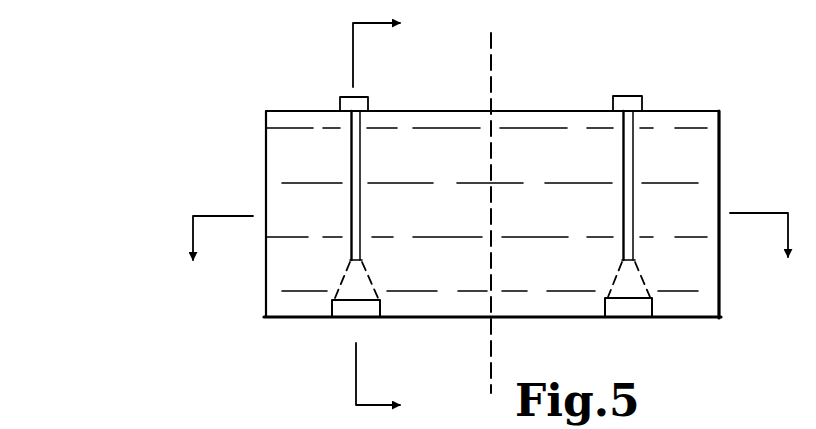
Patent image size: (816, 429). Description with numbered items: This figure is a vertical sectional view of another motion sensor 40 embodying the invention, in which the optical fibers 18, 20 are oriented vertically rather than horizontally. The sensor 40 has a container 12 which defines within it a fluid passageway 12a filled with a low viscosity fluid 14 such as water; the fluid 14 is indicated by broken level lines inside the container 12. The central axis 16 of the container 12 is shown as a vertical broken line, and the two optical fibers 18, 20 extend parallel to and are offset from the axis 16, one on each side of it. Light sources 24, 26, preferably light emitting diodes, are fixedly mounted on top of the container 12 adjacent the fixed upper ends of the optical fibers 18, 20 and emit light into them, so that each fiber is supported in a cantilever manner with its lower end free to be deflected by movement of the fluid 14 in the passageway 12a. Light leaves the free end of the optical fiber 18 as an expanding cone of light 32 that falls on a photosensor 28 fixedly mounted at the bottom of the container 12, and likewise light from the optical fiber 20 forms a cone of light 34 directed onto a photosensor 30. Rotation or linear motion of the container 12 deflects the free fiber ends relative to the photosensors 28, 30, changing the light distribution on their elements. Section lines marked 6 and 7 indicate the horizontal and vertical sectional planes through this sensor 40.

The section line 6- 6 is at (493, 257).
The section line 7- 7 is at (391, 215).
The container 12 is at (266, 145).
The fluid passageway 12a is at (702, 159).
The fluid 14 is at (458, 222).
The central axis 16 is at (490, 55).
The optical fiber 18 is at (361, 155).
The optical fiber 20 is at (622, 157).
The light source 24 is at (341, 107).
The light source 26 is at (628, 96).
The photosensor 28 is at (343, 318).
The photosensor 30 is at (640, 318).
The cone of light 32 is at (368, 282).
The cone of light 34 is at (617, 282).
The sensor 40 is at (549, 90).